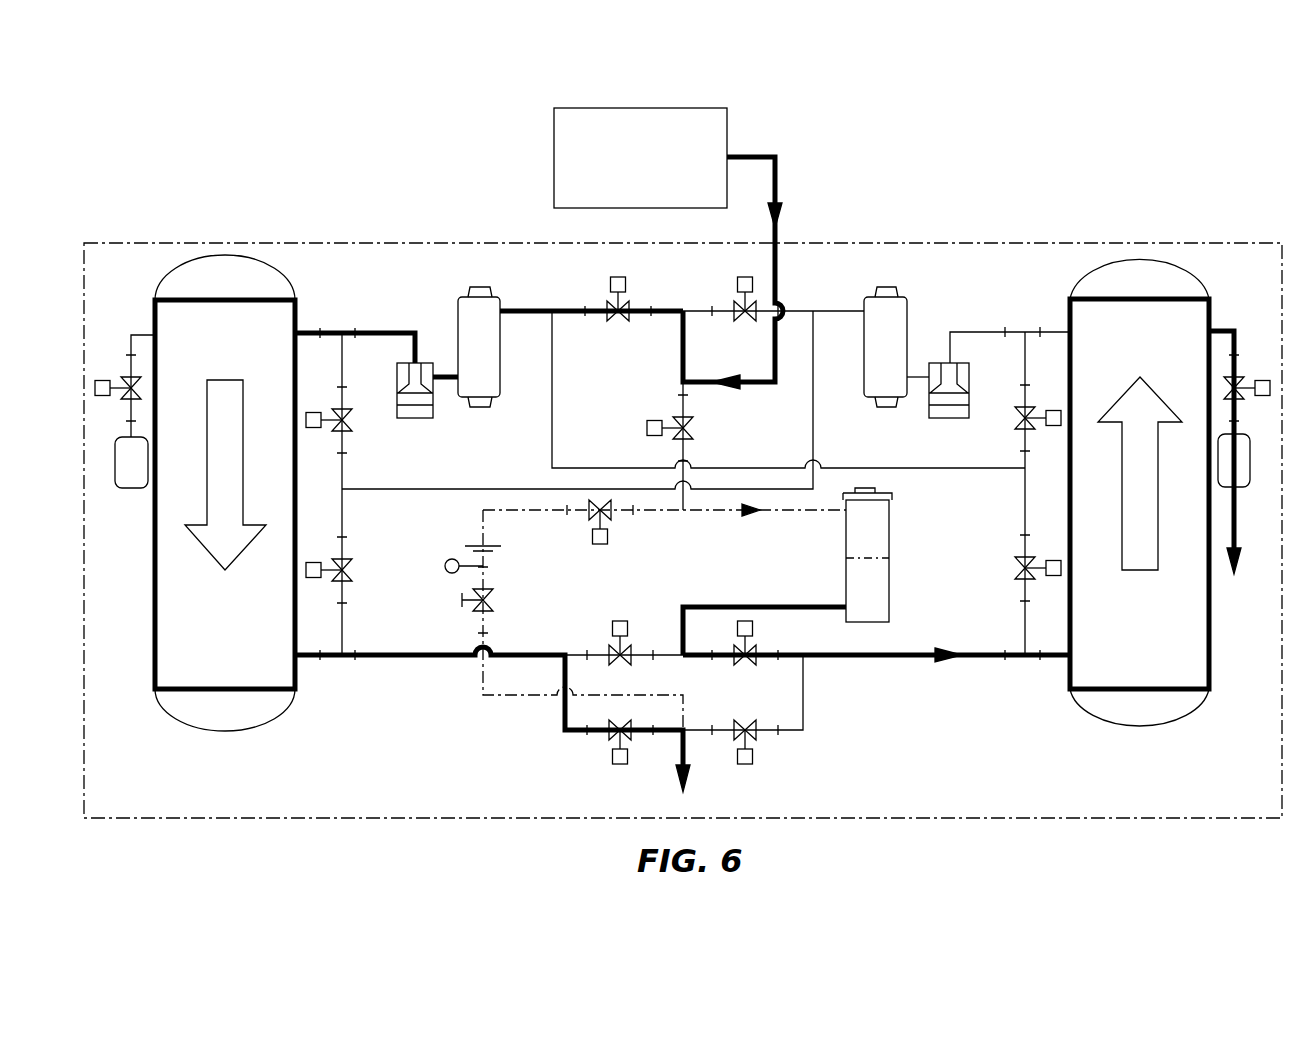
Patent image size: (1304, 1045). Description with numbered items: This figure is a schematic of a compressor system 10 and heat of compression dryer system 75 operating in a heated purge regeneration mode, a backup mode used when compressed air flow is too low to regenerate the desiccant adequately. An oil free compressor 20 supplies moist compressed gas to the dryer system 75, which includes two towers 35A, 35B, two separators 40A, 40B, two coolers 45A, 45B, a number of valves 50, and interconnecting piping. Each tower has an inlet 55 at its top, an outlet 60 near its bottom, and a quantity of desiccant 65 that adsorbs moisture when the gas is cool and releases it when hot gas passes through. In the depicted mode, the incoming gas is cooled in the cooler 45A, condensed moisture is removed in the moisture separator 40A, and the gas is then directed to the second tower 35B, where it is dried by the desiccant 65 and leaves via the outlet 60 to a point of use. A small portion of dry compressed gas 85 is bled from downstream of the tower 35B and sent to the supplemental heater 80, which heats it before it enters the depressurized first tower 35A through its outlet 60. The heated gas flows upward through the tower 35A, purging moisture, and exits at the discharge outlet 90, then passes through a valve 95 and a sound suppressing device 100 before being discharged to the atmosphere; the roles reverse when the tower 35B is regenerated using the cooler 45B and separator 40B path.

The adsorption system 10 is at (880, 108).
The oil free compressor 20 is at (554, 152).
The first tower 35A is at (1211, 318).
The second tower 35B is at (153, 318).
The moisture separator 40A is at (418, 418).
The separator 40B is at (948, 418).
The cooler 45A is at (458, 318).
The cooler 45B is at (907, 318).
The valve 50 is at (610, 285).
The inlet 55 is at (297, 333).
The outlet 60 is at (297, 657).
The desiccant 65 is at (178, 600).
The dryer system 75 is at (1080, 220).
The heater 80 is at (889, 565).
The dry compressed gas 85 is at (1240, 570).
The discharge outlet 90 is at (152, 330).
The valve 95 is at (128, 380).
The sound suppressing device 100 is at (122, 488).